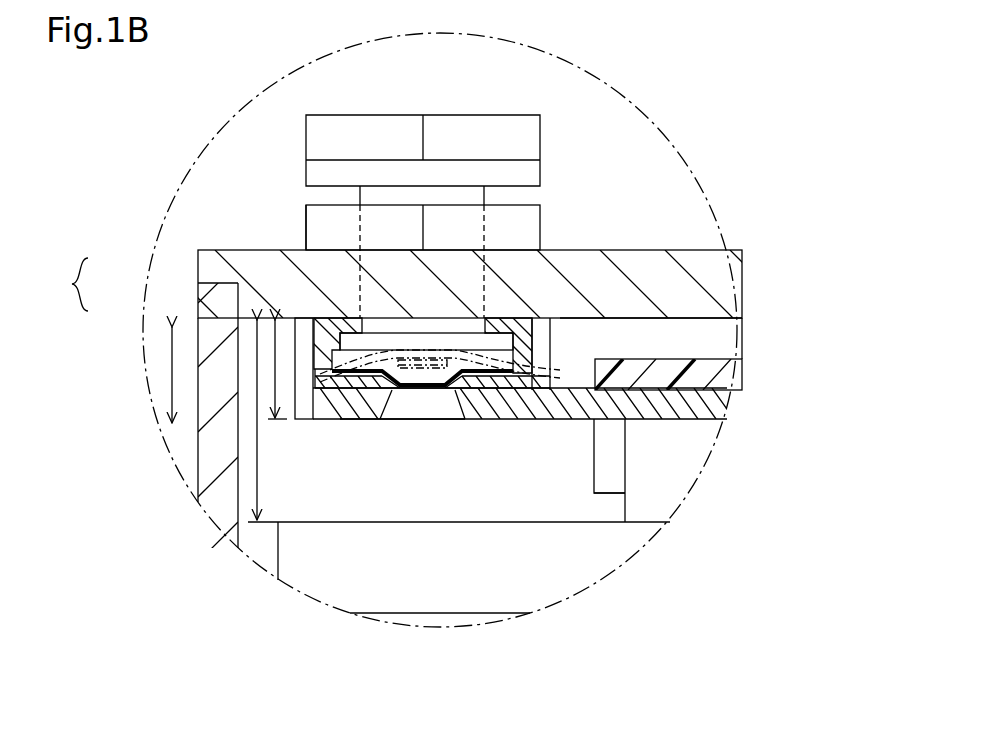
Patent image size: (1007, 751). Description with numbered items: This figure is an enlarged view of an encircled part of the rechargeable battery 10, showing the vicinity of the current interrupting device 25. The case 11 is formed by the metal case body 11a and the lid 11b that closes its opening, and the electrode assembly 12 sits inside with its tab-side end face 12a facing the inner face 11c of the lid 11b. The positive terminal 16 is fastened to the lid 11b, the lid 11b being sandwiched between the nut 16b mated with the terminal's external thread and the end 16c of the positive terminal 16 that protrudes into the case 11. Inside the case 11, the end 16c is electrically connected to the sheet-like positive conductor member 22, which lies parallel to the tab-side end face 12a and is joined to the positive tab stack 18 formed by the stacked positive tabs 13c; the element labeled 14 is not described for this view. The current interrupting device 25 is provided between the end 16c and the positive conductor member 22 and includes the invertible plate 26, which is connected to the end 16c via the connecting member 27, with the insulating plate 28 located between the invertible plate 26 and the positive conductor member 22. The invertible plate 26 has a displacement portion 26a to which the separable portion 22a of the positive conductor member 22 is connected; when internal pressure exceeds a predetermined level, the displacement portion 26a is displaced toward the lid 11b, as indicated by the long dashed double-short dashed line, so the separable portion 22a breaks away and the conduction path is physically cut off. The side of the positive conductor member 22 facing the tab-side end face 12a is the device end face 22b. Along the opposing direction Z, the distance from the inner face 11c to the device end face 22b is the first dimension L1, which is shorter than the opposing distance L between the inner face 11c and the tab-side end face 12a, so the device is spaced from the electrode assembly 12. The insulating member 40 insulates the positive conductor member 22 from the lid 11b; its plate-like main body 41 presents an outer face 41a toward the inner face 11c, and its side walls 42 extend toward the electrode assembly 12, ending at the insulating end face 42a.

The rechargeable battery 10 is at (690, 222).
The case 11 is at (65, 284).
The case body 11a is at (198, 309).
The lid 11b is at (198, 265).
The inner face of the lid 11c is at (628, 318).
The electrode assembly 12 is at (275, 552).
The tab-side end face 12a is at (455, 523).
The positive tabs 13c is at (644, 508).
The bottom plate 14 is at (395, 613).
The positive terminal 16 is at (484, 222).
The nut 16b is at (306, 217).
The end of the positive terminal 16c is at (500, 336).
The positive tab stack 18 is at (720, 462).
The positive conductor member 22 is at (552, 421).
The separable portion 22a is at (416, 400).
The device end face 22b is at (478, 421).
The current interrupting device 25 is at (366, 422).
The invertible plate 26 is at (504, 394).
The displacement portion 26a is at (535, 359).
The connecting member 27 is at (312, 330).
The insulating plate 28 is at (348, 392).
The insulating member 40 is at (682, 360).
The main body 41 is at (720, 361).
The outer face 41a is at (612, 360).
The side walls 42 is at (594, 480).
The insulating end face 42a is at (608, 495).
The opposing distance L is at (260, 478).
The first dimension L1 is at (287, 386).
The opposing direction Z is at (172, 374).